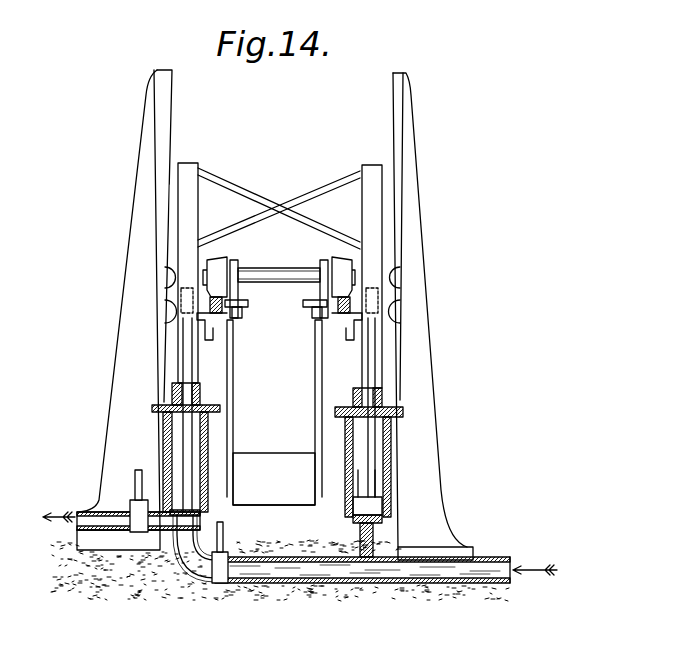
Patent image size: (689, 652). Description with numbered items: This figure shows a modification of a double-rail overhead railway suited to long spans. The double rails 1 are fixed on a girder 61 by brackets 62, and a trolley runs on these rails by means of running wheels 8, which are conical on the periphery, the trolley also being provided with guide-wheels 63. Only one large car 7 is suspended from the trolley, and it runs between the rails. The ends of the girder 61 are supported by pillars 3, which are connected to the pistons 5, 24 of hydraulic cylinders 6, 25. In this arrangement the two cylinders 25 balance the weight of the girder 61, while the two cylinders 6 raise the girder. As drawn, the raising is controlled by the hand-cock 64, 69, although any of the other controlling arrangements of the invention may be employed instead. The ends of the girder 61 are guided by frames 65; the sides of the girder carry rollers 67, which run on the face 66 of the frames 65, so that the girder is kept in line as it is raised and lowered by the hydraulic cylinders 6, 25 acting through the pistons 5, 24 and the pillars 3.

The double rails 1 is at (340, 312).
The pillar 3 is at (190, 378).
The piston 5 is at (200, 512).
The hydraulic cylinder 6 is at (200, 448).
The car 7 is at (274, 479).
The running wheel 8 is at (330, 260).
The piston 24 is at (358, 505).
The hydraulic cylinder 25 is at (352, 437).
The girder 61 is at (188, 175).
The bracket 62 is at (224, 322).
The guide-wheel 63 is at (302, 305).
The hand-cock 64 is at (226, 565).
The frame 65 is at (275, 315).
The face 66 is at (169, 184).
The roller 67 is at (165, 305).
The hand-cock 69 is at (140, 520).